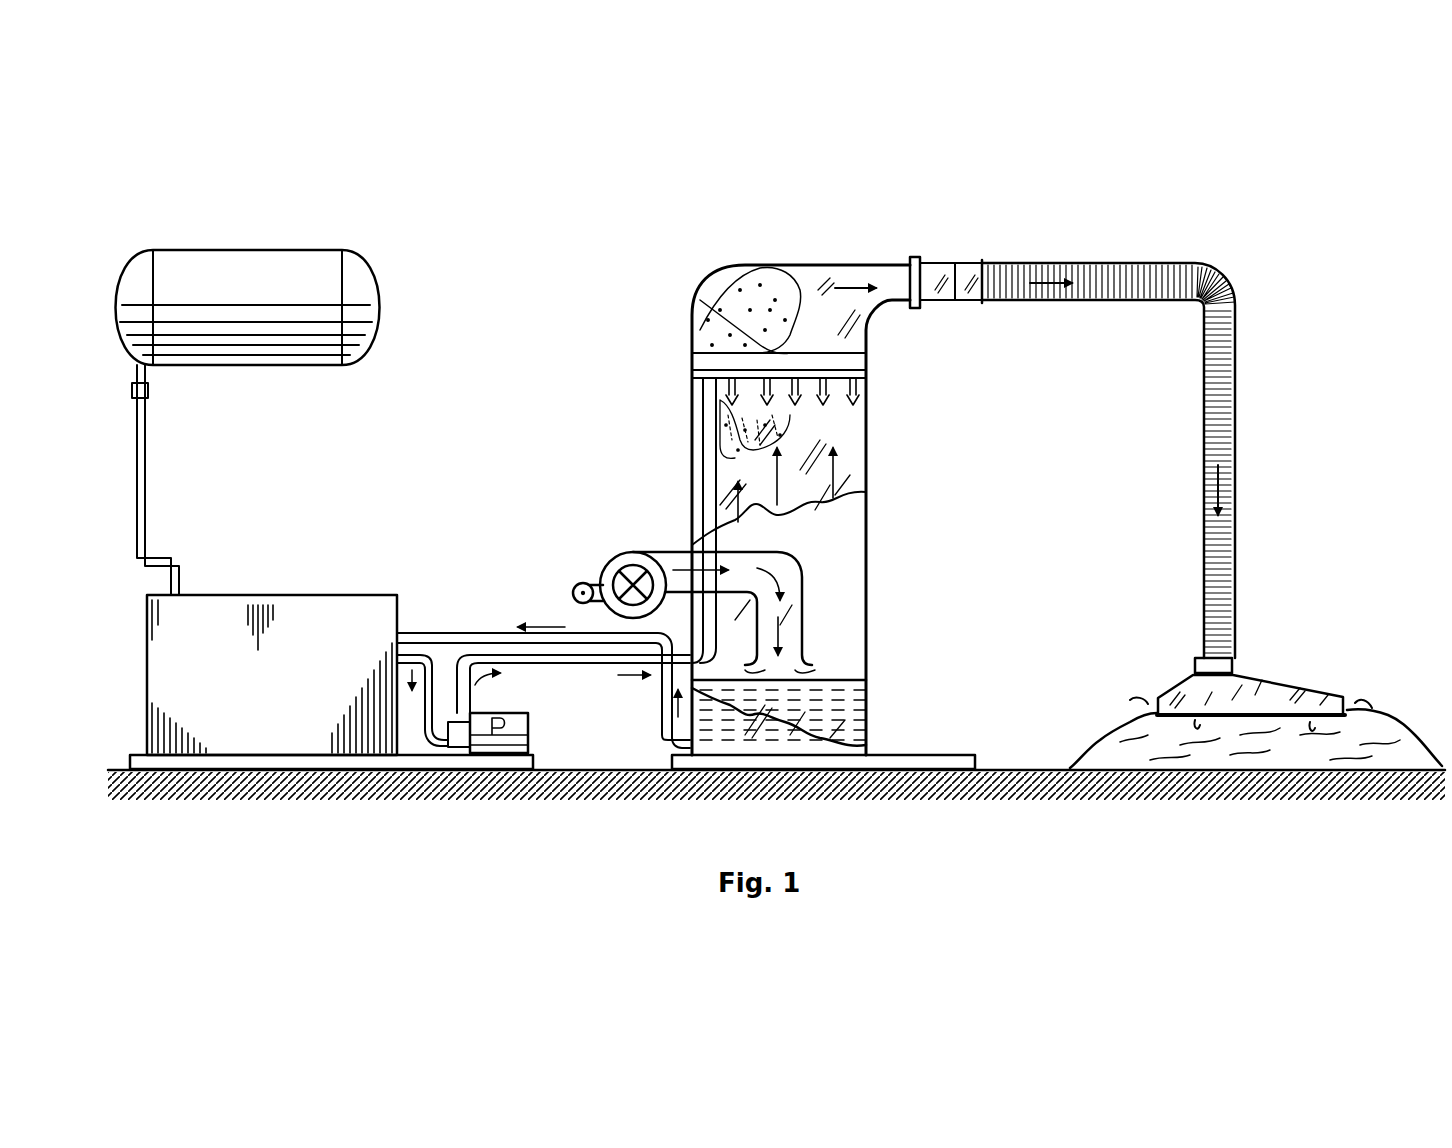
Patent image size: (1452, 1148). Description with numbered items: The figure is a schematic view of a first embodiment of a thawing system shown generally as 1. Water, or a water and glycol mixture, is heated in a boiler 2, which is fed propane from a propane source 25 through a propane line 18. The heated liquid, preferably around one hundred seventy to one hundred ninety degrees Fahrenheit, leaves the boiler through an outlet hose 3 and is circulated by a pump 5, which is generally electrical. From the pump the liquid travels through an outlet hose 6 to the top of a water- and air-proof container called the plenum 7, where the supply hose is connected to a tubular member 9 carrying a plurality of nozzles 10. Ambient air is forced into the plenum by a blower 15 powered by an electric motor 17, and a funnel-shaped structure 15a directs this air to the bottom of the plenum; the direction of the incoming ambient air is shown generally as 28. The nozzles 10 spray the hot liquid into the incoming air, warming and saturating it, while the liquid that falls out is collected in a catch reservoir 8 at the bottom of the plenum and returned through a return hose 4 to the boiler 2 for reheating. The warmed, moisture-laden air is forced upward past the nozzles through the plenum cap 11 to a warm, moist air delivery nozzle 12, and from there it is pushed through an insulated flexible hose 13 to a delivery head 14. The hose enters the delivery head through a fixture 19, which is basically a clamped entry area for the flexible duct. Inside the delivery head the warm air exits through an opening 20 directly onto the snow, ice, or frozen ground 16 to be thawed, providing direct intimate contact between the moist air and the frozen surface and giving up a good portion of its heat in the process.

The first embodiment of the invention 1 is at (1142, 210).
The boiler 2 is at (265, 595).
The outlet hose 3 is at (422, 705).
The return hose 4 is at (430, 633).
The pump 5 is at (530, 726).
The outlet hose 6 is at (605, 668).
The plenum 7 is at (868, 457).
The catch reservoir 8 is at (868, 722).
The tubular member 9 is at (693, 432).
The nozzles 10 is at (740, 322).
The plenum cap 11 is at (830, 263).
The warm, moist air delivery nozzle 12 is at (965, 263).
The insulated flexible hose 13 is at (1230, 290).
The delivery head 14 is at (1275, 690).
The blower 15 is at (642, 552).
The funnel-shaped structure 15a is at (805, 612).
The snow or ice or frozen ground 16 is at (1248, 752).
The electric motor 17 is at (580, 585).
The propane line 18 is at (147, 470).
The fixture 19 is at (1225, 673).
The opening 20 is at (1355, 702).
The propane source 25 is at (255, 250).
The direction of the incoming ambient air 28 is at (693, 502).